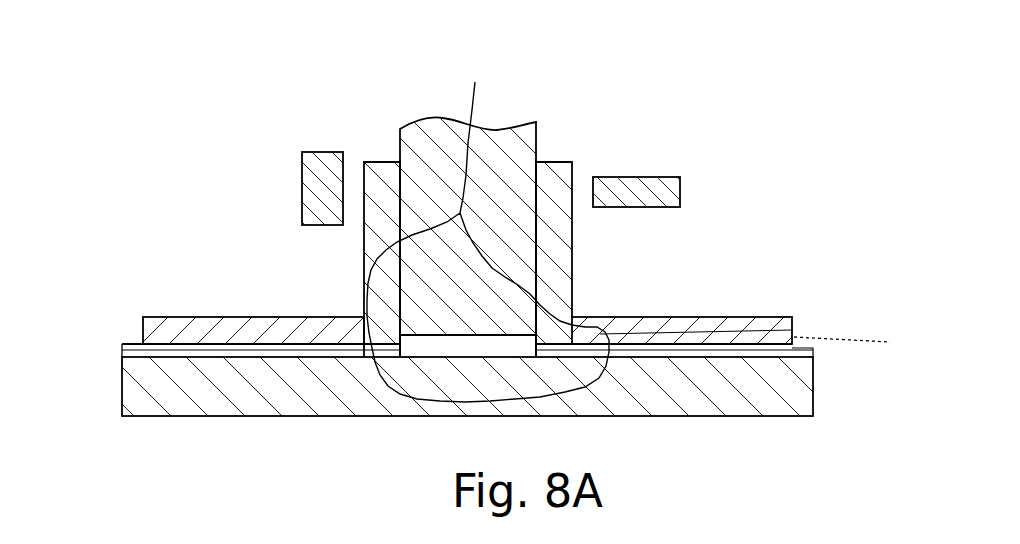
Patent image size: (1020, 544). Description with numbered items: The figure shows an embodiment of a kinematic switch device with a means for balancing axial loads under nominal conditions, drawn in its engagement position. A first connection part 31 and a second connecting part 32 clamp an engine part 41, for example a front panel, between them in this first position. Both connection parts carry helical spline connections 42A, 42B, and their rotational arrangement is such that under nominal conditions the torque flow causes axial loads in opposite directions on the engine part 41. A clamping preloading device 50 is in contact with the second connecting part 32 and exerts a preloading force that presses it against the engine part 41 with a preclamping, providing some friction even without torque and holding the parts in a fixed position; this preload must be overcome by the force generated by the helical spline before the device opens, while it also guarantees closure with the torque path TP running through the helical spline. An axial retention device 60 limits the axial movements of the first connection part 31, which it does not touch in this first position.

The first connection part 31 is at (693, 320).
The second connecting part 32 is at (383, 178).
The engine part 41 is at (499, 141).
The helical spline connection 42A is at (813, 352).
The helical spline connection 42B is at (130, 342).
The clamping preloading device 50 is at (318, 186).
The axial retention device 60 is at (644, 190).
The torque path TP is at (827, 337).